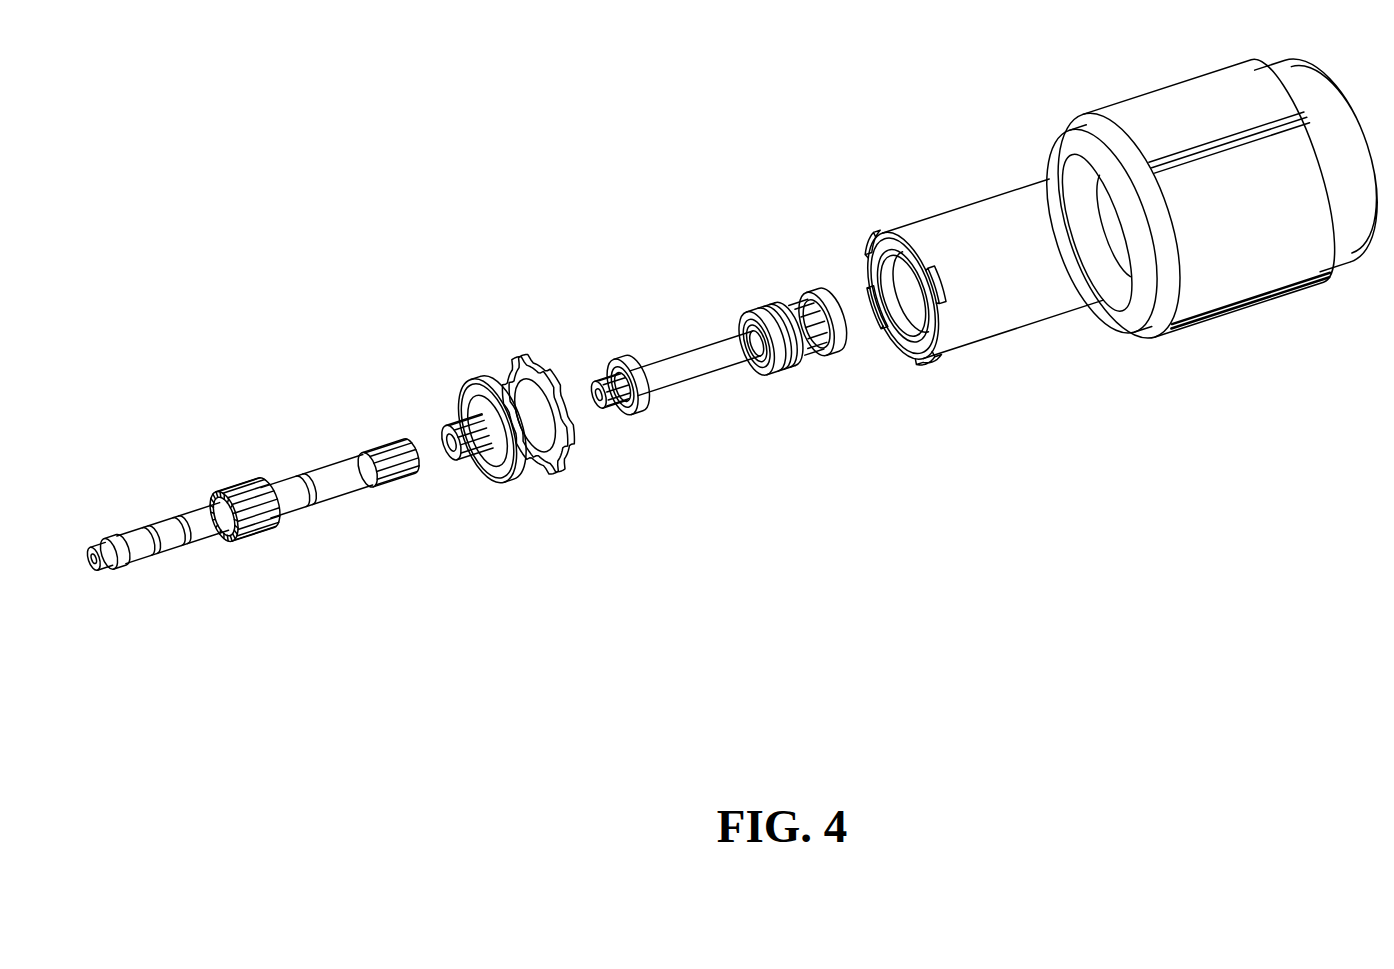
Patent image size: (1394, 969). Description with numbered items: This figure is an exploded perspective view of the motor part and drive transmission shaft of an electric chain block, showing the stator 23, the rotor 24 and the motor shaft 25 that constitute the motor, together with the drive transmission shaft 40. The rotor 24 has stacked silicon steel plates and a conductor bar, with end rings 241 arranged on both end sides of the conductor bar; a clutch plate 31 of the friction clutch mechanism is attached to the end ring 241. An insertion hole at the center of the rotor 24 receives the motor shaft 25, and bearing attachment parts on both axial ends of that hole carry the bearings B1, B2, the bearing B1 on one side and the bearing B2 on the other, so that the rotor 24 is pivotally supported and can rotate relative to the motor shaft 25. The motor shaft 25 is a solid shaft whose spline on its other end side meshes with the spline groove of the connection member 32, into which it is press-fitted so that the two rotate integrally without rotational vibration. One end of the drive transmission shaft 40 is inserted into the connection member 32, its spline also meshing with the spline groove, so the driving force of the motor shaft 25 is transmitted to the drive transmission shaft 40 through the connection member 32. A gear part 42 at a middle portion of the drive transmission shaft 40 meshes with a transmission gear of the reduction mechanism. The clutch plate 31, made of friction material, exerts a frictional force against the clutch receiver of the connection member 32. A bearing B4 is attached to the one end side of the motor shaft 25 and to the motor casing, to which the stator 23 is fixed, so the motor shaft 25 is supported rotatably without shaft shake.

The stator 23 is at (1240, 282).
The rotor 24 is at (976, 284).
The end ring 241 is at (908, 255).
The motor shaft 25 is at (695, 368).
The clutch plate 31 is at (531, 340).
The connection member 32 is at (493, 475).
The drive transmission shaft 40 is at (253, 509).
The gear part 42 is at (226, 496).
The bearing B1 is at (775, 372).
The bearing B2 is at (643, 418).
The bearing B4 is at (822, 292).